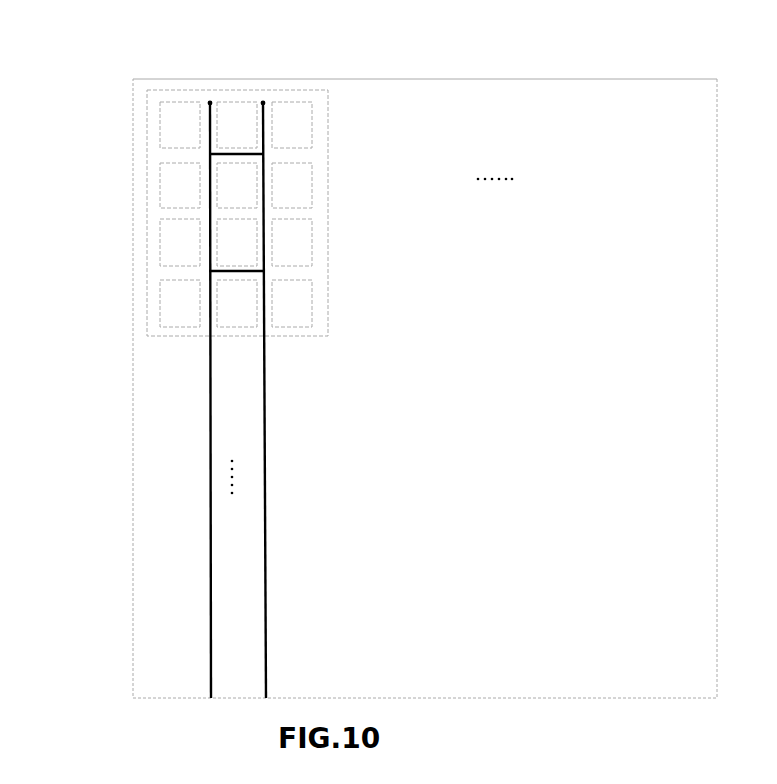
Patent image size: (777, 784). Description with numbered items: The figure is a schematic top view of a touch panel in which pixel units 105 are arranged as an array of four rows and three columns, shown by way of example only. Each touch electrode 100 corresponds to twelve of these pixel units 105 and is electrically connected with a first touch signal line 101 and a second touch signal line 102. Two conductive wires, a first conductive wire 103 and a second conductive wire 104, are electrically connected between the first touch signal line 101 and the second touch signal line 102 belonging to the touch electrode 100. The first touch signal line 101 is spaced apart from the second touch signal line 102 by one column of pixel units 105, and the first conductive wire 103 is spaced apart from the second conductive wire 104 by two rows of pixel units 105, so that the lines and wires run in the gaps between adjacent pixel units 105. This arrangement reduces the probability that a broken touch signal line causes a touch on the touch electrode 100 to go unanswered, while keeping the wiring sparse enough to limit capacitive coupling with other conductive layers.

The touch electrode 100 is at (179, 213).
The first touch signal line 101 is at (124, 399).
The second touch signal line 102 is at (153, 399).
The first conductive wire 103 is at (309, 128).
The second conductive wire 104 is at (242, 267).
The pixel units 105 is at (237, 103).